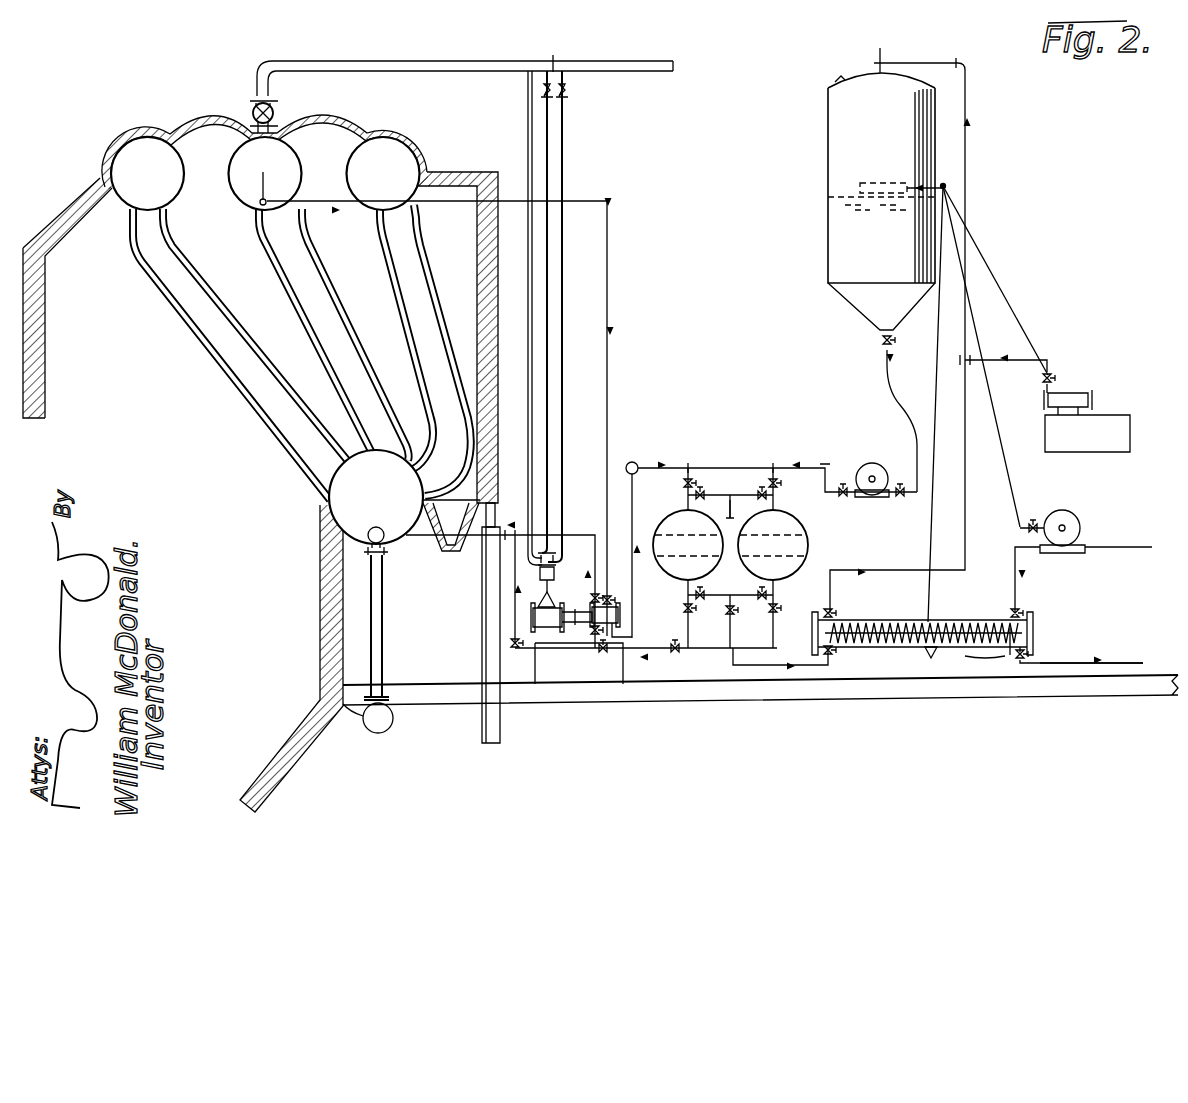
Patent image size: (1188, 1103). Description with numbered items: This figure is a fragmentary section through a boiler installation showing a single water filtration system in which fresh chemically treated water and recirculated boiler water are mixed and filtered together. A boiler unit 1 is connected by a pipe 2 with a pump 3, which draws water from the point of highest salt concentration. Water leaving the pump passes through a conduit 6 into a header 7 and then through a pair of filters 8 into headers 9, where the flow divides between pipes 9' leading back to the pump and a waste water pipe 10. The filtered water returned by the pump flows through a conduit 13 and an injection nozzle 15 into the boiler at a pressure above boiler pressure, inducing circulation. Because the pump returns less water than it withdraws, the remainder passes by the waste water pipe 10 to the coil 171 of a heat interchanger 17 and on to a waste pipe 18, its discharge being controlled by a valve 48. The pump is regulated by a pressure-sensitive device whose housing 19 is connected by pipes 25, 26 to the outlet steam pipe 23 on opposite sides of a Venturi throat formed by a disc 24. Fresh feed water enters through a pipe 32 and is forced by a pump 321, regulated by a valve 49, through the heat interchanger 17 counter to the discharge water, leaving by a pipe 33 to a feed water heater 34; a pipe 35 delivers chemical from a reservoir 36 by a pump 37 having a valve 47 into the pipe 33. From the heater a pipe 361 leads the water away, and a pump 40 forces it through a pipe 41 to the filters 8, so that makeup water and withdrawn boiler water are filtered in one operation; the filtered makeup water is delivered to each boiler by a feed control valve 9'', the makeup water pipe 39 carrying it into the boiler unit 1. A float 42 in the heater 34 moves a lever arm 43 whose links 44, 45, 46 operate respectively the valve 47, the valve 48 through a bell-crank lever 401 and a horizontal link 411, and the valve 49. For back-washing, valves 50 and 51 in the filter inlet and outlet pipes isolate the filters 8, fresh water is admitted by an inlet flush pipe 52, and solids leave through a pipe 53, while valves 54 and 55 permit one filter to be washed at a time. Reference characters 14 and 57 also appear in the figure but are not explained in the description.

The boiler unit 1 is at (148, 150).
The pipe 2 is at (612, 378).
The pump 3 is at (592, 610).
The conduit 6 is at (630, 601).
The header 7 is at (640, 462).
The filters 8 is at (675, 520).
The headers 9 is at (671, 660).
The pipes 9' is at (670, 660).
The feed control valve 9'' is at (492, 651).
The waste water pipe 10 is at (755, 690).
The conduit 13 is at (570, 535).
The blow-off pipe 14 is at (385, 582).
The injection nozzle 15 is at (362, 548).
The heat interchanger 17 is at (1002, 625).
The coil 171 is at (840, 665).
The waste pipe 18 is at (1085, 665).
The housing 19 is at (539, 562).
The outlet steam pipe 23 is at (425, 62).
The disc 24 is at (558, 57).
The pipe 25 is at (546, 283).
The pipe 26 is at (567, 348).
The pipe 32 is at (1020, 597).
The pump 321 is at (1082, 533).
The pipe 33 is at (970, 540).
The feed water heater 34 is at (899, 330).
The pipe 35 is at (1027, 345).
The reservoir 36 is at (1132, 436).
The pipe 361 is at (902, 405).
The pump 37 is at (1068, 392).
The makeup water pipe 39 is at (488, 604).
The pump 40 is at (872, 463).
The bell-crank lever 401 is at (926, 668).
The pipe 41 is at (800, 466).
The horizontal link 411 is at (966, 662).
The float 42 is at (880, 183).
The lever arm 43 is at (948, 186).
The link 44 is at (1000, 290).
The link 45 is at (932, 604).
The link 46 is at (1008, 480).
The valve 47 is at (1053, 374).
The valve 48 is at (1025, 652).
The valve 49 is at (1042, 512).
The valves 50 is at (683, 486).
The valves 51 is at (683, 614).
The inlet flush pipe 52 is at (716, 594).
The pipe 53 is at (747, 507).
The valve 54 is at (742, 494).
The valve 55 is at (734, 614).
The valve 57 is at (880, 342).